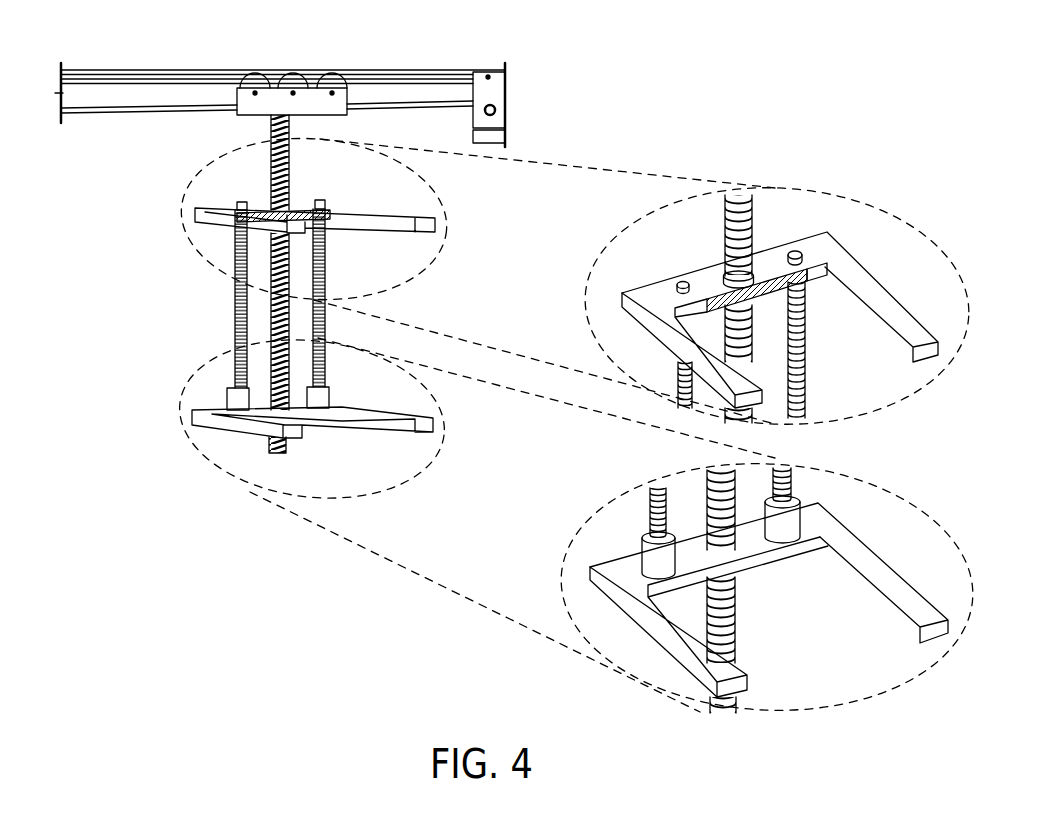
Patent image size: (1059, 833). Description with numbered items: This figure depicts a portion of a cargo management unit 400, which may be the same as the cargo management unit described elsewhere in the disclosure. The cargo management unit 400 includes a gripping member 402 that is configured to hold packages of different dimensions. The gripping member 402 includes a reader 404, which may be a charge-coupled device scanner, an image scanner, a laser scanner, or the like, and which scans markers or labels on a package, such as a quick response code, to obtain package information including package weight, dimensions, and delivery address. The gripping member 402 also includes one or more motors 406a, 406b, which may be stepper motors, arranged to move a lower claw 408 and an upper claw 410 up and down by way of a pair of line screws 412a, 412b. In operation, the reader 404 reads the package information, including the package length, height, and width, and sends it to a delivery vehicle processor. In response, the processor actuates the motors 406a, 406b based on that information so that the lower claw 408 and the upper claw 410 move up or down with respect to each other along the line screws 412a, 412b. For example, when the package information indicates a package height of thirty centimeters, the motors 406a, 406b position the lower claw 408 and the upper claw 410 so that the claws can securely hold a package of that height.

The cargo management unit 400 is at (260, 58).
The gripping member 402 is at (185, 297).
The reader 404 is at (330, 213).
The motor 406a is at (642, 547).
The motor 406b is at (788, 520).
The lower claw 408 is at (212, 421).
The upper claw 410 is at (195, 213).
The line screw 412a is at (235, 334).
The line screw 412b is at (326, 267).